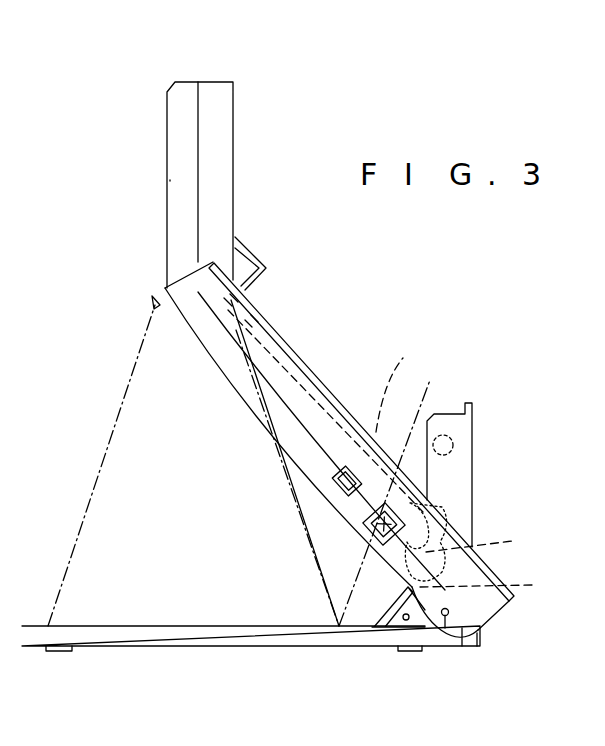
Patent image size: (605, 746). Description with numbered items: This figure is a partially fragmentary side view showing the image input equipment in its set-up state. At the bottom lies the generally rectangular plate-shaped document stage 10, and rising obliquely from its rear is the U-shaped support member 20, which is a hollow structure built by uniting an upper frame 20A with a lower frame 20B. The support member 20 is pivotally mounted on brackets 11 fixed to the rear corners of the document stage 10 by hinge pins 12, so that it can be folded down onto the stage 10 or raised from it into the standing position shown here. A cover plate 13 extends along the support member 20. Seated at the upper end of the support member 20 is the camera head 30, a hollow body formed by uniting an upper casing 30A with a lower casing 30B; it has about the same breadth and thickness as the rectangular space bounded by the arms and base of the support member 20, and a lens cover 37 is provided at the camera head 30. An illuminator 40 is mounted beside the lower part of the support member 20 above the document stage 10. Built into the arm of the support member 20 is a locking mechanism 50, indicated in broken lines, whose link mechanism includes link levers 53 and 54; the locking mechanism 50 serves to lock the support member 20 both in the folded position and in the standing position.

The document stage 10 is at (175, 635).
The brackets 11 is at (400, 623).
The hinge pins 12 is at (445, 617).
The cover plate 13 is at (290, 331).
The U-shaped support member 20 is at (222, 381).
The upper frame 20A is at (483, 612).
The lower frame 20B is at (462, 641).
The camera head 30 is at (250, 143).
The upper casing 30A is at (218, 98).
The lower casing 30B is at (182, 97).
The lens cover 37 is at (270, 264).
The illuminator 40 is at (460, 498).
The locking mechanisms 50 is at (397, 374).
The link lever 53 is at (490, 539).
The link lever 54 is at (496, 582).